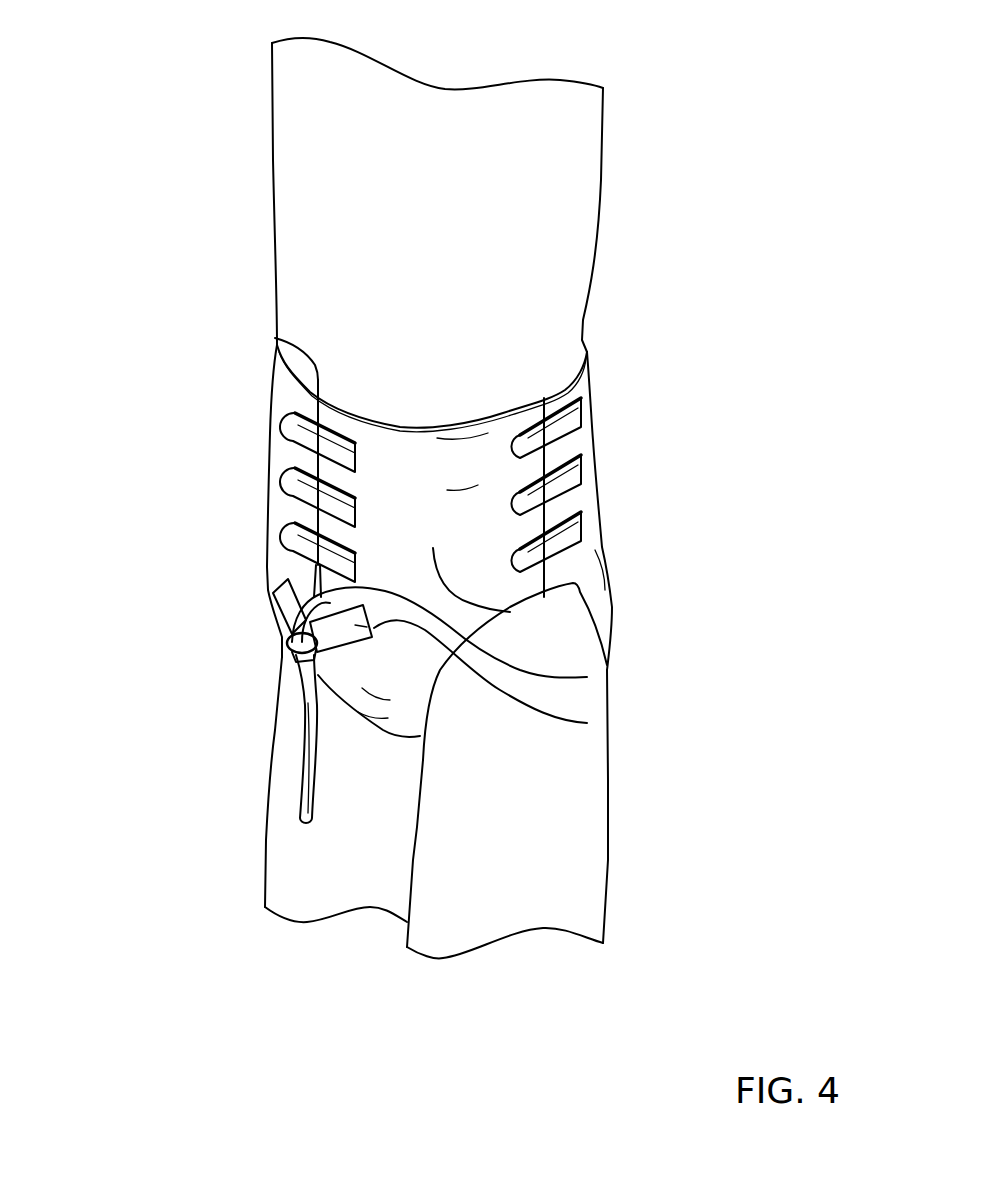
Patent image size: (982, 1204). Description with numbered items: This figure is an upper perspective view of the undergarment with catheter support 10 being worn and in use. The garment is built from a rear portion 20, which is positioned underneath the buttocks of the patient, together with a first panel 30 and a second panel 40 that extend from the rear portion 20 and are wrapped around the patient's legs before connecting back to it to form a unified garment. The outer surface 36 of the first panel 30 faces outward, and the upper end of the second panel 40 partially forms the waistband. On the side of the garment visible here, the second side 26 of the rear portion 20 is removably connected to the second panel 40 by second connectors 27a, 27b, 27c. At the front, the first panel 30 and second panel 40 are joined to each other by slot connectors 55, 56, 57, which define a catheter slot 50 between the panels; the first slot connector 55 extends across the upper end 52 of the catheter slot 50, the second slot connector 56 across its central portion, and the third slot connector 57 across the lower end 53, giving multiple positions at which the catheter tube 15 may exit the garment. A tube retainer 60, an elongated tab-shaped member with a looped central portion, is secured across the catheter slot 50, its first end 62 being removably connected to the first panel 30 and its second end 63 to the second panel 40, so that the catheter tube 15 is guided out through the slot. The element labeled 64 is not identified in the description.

The undergarment with catheter support 10 is at (139, 355).
The catheter tube 15 is at (298, 780).
The rear portion 20 is at (588, 352).
The second side of the rear portion 26 is at (560, 508).
The second connector 27a is at (557, 424).
The second connector 27b is at (560, 480).
The second connector 27c is at (560, 537).
The first panel 30 is at (280, 387).
The outer surface 36 is at (285, 452).
The second panel 40 is at (510, 610).
The catheter slot 50 is at (300, 509).
The upper end of the catheter slot 52 is at (283, 345).
The lower end of the catheter slot 53 is at (587, 677).
The first slot connector 55 is at (300, 423).
The second slot connector 56 is at (285, 477).
The third slot connector 57 is at (283, 533).
The tube retainer 60 is at (290, 602).
The first end of the tube retainer 62 is at (277, 577).
The second end of the tube retainer 63 is at (587, 723).
The strap fold 64 is at (288, 655).